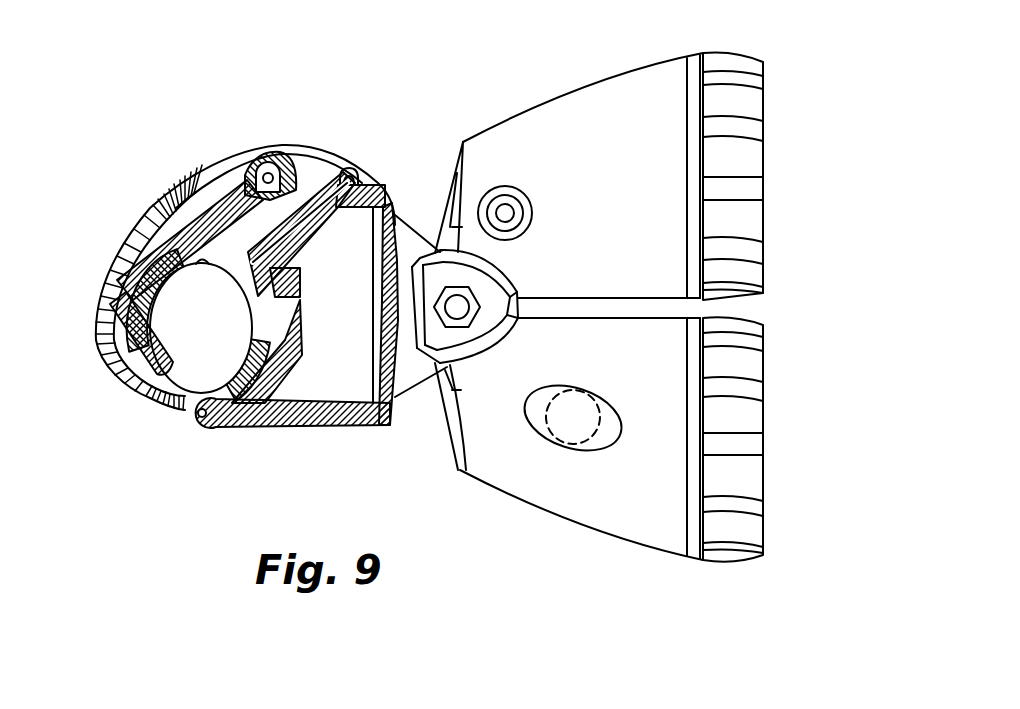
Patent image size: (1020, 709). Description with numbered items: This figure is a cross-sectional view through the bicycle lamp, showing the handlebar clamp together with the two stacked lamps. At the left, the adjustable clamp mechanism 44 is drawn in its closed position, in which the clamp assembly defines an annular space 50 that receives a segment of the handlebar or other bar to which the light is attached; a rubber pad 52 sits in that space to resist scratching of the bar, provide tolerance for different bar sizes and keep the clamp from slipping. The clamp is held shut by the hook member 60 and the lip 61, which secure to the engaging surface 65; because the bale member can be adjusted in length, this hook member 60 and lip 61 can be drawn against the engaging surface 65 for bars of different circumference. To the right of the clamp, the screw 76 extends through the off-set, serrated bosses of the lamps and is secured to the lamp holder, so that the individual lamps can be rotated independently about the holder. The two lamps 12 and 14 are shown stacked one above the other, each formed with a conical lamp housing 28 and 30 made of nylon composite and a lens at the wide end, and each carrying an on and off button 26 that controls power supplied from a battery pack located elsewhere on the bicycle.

The lamp 12 is at (763, 447).
The lamp 14 is at (763, 170).
The on and off button 26 is at (570, 423).
The lamp housing 28 is at (613, 497).
The lamp housing 30 is at (547, 140).
The adjustable clamp mechanism 44 is at (103, 290).
The annular space 50 is at (213, 347).
The pad 52 is at (283, 323).
The hook member 60 is at (288, 148).
The lip 61 is at (362, 185).
The engaging surface 65 is at (349, 166).
The screw 76 is at (457, 307).